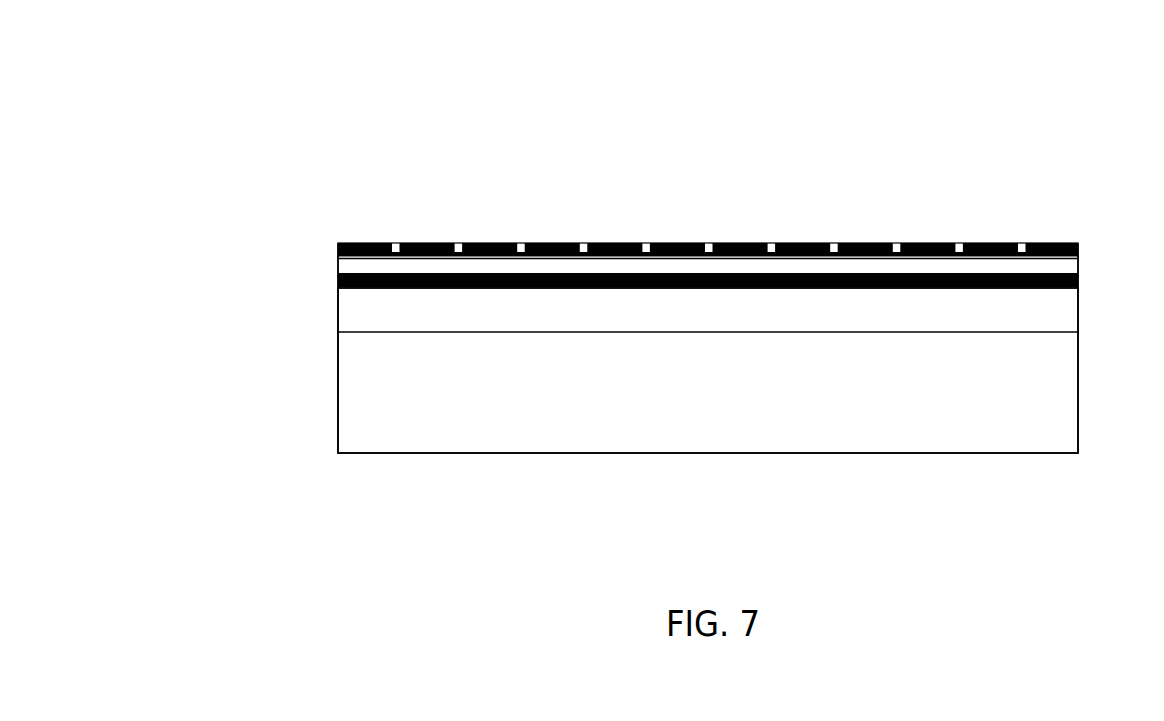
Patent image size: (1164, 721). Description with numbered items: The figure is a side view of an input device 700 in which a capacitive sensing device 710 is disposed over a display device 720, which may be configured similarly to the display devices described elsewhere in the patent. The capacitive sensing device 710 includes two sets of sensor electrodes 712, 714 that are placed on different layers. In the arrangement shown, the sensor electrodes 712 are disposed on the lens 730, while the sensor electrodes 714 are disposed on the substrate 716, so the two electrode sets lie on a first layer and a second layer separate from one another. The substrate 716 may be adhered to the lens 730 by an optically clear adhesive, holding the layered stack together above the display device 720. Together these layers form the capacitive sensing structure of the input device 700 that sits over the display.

The input device 700 is at (278, 66).
The capacitive sensing device 710 is at (1087, 240).
The sensor electrodes 712 is at (340, 278).
The sensor electrodes 714 is at (350, 243).
The substrate 716 is at (347, 262).
The display device 720 is at (1087, 285).
The lens 730 is at (357, 314).